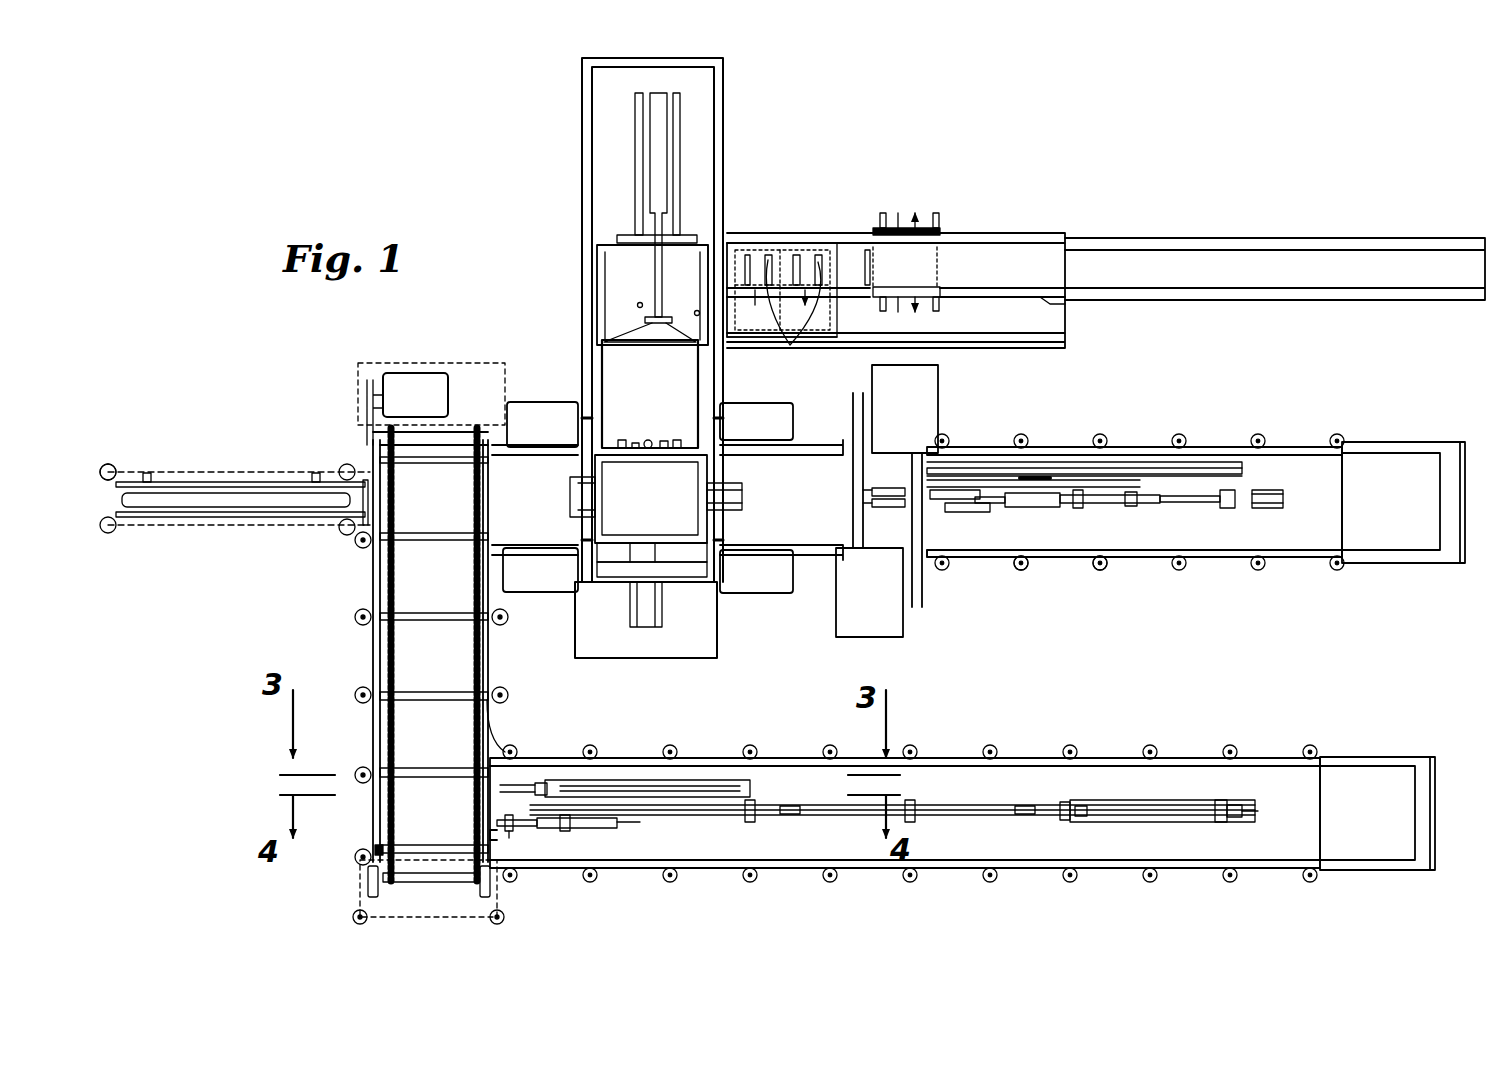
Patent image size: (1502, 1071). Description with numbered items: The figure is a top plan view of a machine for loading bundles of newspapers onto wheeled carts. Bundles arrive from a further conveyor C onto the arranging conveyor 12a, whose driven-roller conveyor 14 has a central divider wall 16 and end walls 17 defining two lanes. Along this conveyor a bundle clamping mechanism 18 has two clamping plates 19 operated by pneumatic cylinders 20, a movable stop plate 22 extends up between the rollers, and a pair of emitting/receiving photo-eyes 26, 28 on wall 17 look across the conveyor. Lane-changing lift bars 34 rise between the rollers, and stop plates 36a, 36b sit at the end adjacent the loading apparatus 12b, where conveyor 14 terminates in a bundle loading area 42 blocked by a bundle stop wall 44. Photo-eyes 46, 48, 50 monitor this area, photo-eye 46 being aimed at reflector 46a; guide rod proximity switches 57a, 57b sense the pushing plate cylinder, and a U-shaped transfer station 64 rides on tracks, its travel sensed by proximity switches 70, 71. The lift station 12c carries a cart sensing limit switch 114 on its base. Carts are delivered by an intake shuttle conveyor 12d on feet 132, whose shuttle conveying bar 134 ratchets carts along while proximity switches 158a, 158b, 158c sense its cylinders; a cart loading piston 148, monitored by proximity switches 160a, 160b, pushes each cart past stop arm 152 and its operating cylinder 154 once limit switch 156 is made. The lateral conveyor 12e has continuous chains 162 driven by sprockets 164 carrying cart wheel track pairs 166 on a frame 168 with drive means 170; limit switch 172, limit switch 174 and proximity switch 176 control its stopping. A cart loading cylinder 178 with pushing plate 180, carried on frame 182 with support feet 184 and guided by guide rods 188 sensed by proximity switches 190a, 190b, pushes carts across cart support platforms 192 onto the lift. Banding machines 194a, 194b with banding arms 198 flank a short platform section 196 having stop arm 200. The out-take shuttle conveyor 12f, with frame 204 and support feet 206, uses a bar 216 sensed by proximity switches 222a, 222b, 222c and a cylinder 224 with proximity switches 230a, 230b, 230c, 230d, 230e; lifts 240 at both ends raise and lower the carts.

The arranging conveyor 12a is at (980, 213).
The loading apparatus 12b is at (577, 130).
The lift station 12c is at (730, 604).
The intake shuttle conveyor 12d is at (1137, 728).
The lateral conveyor 12e is at (343, 598).
The out-take shuttle conveyor 12f is at (1240, 418).
The conveyor 14 is at (1040, 313).
The central divider wall 16 is at (1005, 290).
The end walls 17 is at (1028, 242).
The bundle clamping mechanism 18 is at (960, 262).
The clamping plates 19 is at (872, 292).
The pneumatic cylinders 20 is at (935, 213).
The movable stop plate 22 is at (865, 250).
The emitting/receiving photo-eye 26 is at (795, 232).
The emitting/receiving photo-eye 28 is at (770, 232).
The bars 34 is at (790, 348).
The stop plate 36a is at (727, 290).
The stop plate 36b is at (735, 340).
The first bundle loading area 42 is at (596, 272).
The bundle stop wall 44 is at (597, 290).
The ERPE 46 is at (698, 365).
The reflector 46a is at (710, 240).
The ERPE 48 is at (697, 313).
The ERPE 50 is at (697, 263).
The guide rod proximity switch 57a is at (627, 112).
The guide rod proximity switch 57b is at (627, 212).
The transfer station 64 is at (602, 378).
The proximity switch 70 is at (640, 252).
The proximity switch 71 is at (640, 305).
The cart sensing limit switch 114 is at (690, 527).
The feet 132 is at (990, 745).
The shuttle conveying bar 134 is at (1055, 822).
The cart loading piston 148 is at (632, 780).
The stop arm 152 is at (552, 826).
The operating cylinder 154 is at (598, 828).
The cart sensing limit switch 156 is at (505, 858).
The proximity switch 158a is at (1225, 800).
The proximity switch 158b is at (1175, 800).
The proximity switch 158c is at (1140, 807).
The proximity switch 160a is at (715, 782).
The proximity switch 160b is at (590, 782).
The continuous chains 162 is at (375, 633).
The sprockets 164 is at (425, 900).
The cart wheel track pairs 166 is at (430, 692).
The frame 168 is at (370, 575).
The drive means 170 is at (431, 404).
The limit switch 172 is at (380, 845).
The limit switch 174 is at (362, 470).
The proximity switch 176 is at (358, 490).
The cart loading cylinder 178 is at (245, 515).
The pushing plate 180 is at (380, 490).
The frame 182 is at (155, 528).
The support feet 184 is at (110, 470).
The guide rods 188 is at (228, 482).
The proximity switch 190a is at (308, 473).
The proximity switch 190b is at (152, 474).
The cart support platforms 192 is at (667, 497).
The banding machine 194a is at (869, 592).
The banding machine 194b is at (895, 456).
The short platform section 196 is at (890, 510).
The banding arms 198 is at (853, 405).
The stop arm 200 is at (863, 493).
The frame 204 is at (1165, 570).
The support feet 206 is at (1095, 570).
The bar 216 is at (1270, 498).
The proximity switch 222a is at (1155, 507).
The proximity switch 222b is at (1212, 510).
The proximity switch 222c is at (1262, 513).
The cylinder 224 is at (1245, 475).
The proximity switch 230a is at (958, 468).
The proximity switch 230b is at (988, 468).
The proximity switch 230c is at (1030, 468).
The proximity switch 230d is at (1072, 468).
The proximity switch 230e is at (1120, 468).
The lifts 240 is at (1442, 445).
The conveyor C is at (1238, 240).